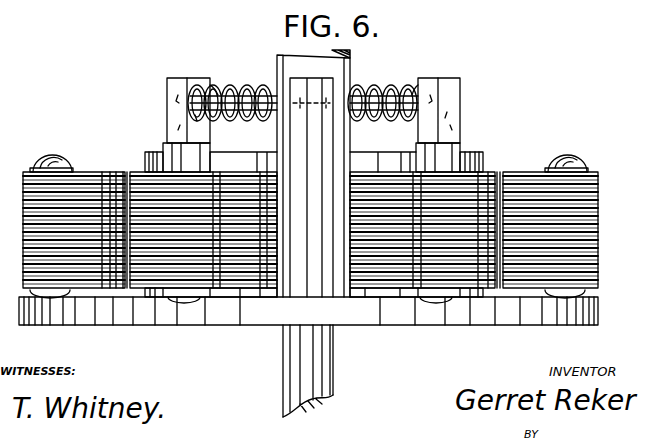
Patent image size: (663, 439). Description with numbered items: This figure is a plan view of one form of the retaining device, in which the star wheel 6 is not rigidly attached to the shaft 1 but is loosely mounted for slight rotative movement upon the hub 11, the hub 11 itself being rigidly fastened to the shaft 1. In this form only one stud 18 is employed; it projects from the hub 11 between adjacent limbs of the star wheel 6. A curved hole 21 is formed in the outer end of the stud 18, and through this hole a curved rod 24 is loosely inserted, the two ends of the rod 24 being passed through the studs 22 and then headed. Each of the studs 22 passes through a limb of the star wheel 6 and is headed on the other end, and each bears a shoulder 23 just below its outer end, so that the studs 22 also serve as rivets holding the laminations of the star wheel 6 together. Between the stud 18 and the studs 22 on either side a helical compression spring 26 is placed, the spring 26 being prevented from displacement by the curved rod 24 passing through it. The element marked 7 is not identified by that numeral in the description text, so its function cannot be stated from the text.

The shaft 1 is at (348, 70).
The star wheel 6 is at (598, 238).
The ball 7 is at (572, 165).
The hub 11 is at (479, 318).
The stud 18 is at (310, 287).
The curved hole 21 is at (351, 84).
The studs 22 is at (167, 92).
The shoulder 23 is at (466, 152).
The curved rod 24 is at (232, 88).
The helical compression spring 26 is at (218, 79).